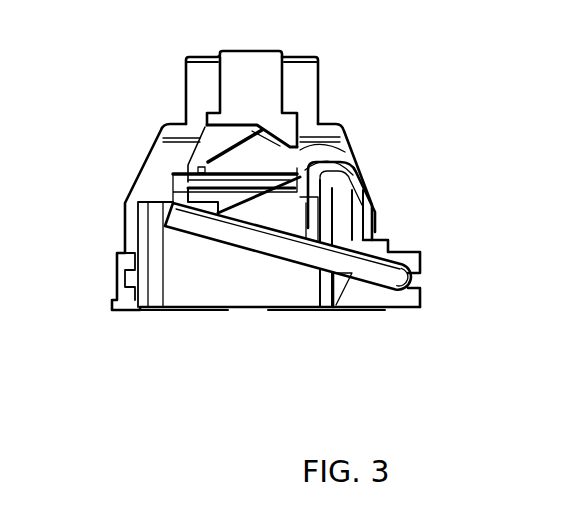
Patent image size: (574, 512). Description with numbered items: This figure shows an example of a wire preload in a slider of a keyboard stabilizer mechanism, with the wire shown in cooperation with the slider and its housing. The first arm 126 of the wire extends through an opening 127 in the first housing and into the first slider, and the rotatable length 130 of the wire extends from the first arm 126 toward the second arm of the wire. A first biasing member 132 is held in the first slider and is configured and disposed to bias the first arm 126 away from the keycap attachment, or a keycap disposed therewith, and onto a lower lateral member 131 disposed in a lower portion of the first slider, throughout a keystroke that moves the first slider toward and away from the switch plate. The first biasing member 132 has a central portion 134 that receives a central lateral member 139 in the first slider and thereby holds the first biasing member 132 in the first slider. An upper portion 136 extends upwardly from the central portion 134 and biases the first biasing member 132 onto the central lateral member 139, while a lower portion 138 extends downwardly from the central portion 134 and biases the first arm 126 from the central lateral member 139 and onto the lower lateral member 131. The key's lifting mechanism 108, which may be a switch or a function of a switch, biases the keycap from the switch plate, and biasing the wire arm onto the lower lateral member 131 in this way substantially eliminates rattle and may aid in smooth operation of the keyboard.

The lifting mechanism 108 is at (137, 177).
The first arm 126 is at (362, 232).
The opening 127 is at (340, 298).
The rotatable length 130 is at (418, 281).
The lower lateral member 131 is at (178, 238).
The first biasing member 132 is at (210, 160).
The central portion 134 is at (313, 150).
The upper portion 136 is at (215, 133).
The lower portion 138 is at (240, 205).
The central lateral member 139 is at (172, 183).